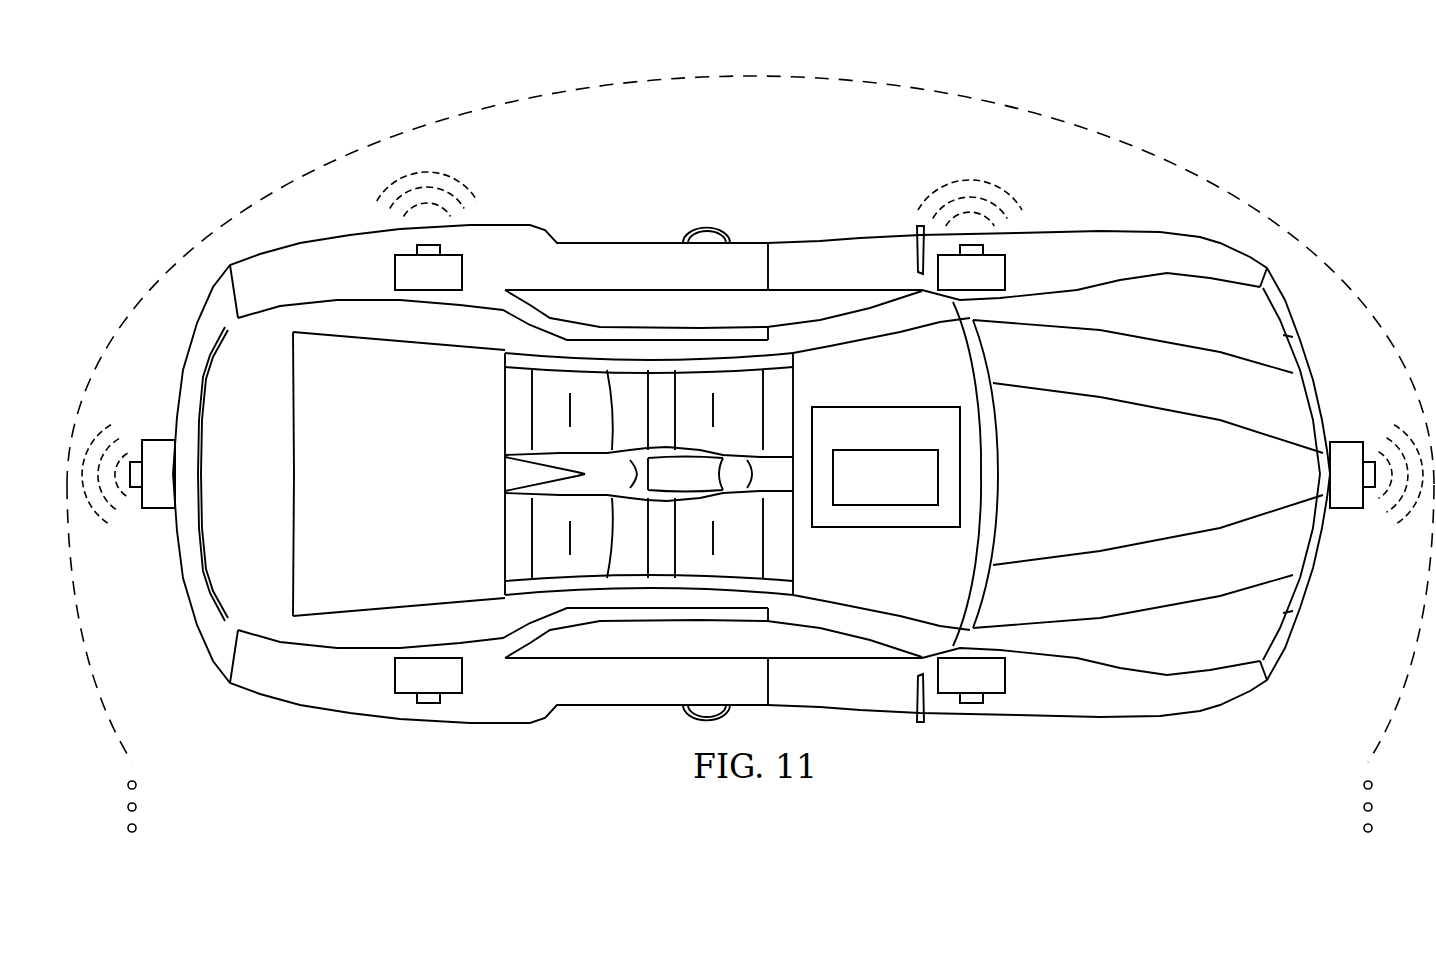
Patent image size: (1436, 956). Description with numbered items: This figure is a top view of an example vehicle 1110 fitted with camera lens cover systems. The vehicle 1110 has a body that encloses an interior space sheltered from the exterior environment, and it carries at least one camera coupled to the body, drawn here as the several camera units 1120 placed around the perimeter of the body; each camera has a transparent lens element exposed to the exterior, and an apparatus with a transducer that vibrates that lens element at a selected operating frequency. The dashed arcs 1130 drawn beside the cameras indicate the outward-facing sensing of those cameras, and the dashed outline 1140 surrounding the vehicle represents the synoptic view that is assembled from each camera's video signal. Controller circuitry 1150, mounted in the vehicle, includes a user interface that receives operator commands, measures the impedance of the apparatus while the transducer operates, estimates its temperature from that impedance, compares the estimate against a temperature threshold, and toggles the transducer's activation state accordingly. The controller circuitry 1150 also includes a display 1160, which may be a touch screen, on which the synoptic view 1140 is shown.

The vehicle 1110 is at (1177, 720).
The camera sensor 1120 is at (1005, 673).
The sensor signal / field of view 1130 is at (977, 180).
The synoptic view 1140 is at (557, 93).
The controller circuitry 1150 is at (886, 442).
The display 1160 is at (915, 492).